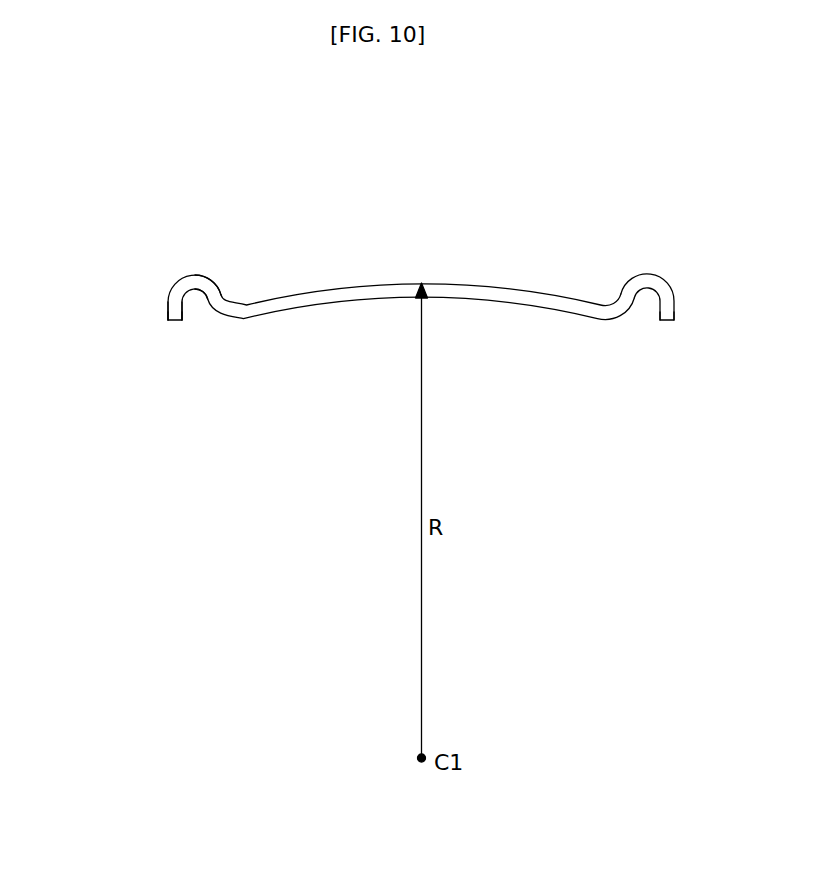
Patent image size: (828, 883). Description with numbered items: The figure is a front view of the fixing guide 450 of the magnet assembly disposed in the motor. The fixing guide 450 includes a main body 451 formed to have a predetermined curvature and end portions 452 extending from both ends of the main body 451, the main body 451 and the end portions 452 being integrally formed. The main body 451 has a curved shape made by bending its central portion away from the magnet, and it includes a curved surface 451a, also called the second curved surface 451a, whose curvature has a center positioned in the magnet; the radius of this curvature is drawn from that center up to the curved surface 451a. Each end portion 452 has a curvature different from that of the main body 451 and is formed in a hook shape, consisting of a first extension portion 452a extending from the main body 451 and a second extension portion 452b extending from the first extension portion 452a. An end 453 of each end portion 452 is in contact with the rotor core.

The fixing guide 450 is at (70, 122).
The main body 451 is at (500, 295).
The curved surface 451a is at (363, 283).
The end portion 452 is at (273, 195).
The first extension portion 452a is at (222, 288).
The second extension portion 452b is at (177, 289).
The end 453 is at (178, 325).